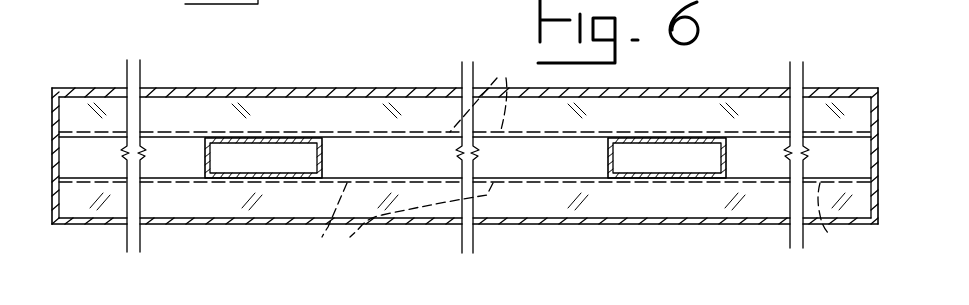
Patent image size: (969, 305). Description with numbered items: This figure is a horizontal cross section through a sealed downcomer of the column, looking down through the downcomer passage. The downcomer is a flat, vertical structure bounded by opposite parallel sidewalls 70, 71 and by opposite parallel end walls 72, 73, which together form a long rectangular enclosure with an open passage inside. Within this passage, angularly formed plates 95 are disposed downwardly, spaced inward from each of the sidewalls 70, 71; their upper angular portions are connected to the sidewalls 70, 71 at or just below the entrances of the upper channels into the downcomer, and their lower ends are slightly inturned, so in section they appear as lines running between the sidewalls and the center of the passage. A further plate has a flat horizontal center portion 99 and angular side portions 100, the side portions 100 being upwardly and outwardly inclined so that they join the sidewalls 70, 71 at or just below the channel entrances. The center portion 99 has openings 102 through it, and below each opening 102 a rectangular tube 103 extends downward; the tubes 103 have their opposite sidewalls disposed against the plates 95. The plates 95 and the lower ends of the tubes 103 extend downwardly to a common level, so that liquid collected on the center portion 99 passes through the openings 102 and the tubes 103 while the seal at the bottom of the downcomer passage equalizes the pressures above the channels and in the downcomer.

The sidewall 70 is at (90, 88).
The sidewall 71 is at (86, 226).
The end wall 72 is at (879, 150).
The end wall 73 is at (52, 155).
The angularly formed plate 95 is at (586, 157).
The flat horizontal center portion 99 is at (188, 168).
The angular side portion 100 is at (240, 197).
The opening 102 is at (282, 168).
The rectangular tube 103 is at (323, 156).